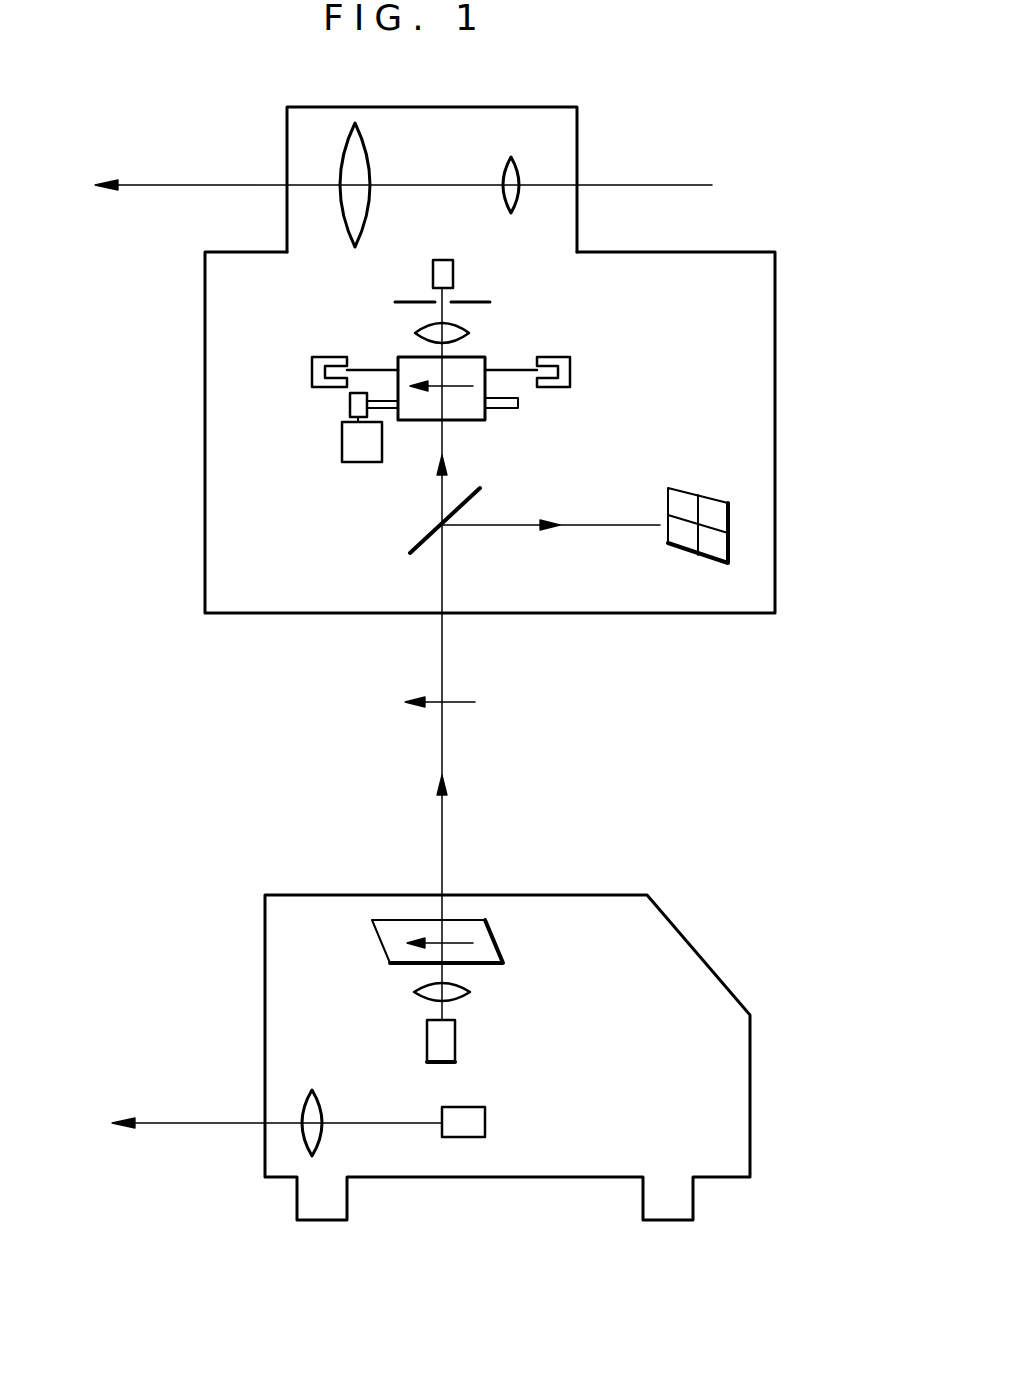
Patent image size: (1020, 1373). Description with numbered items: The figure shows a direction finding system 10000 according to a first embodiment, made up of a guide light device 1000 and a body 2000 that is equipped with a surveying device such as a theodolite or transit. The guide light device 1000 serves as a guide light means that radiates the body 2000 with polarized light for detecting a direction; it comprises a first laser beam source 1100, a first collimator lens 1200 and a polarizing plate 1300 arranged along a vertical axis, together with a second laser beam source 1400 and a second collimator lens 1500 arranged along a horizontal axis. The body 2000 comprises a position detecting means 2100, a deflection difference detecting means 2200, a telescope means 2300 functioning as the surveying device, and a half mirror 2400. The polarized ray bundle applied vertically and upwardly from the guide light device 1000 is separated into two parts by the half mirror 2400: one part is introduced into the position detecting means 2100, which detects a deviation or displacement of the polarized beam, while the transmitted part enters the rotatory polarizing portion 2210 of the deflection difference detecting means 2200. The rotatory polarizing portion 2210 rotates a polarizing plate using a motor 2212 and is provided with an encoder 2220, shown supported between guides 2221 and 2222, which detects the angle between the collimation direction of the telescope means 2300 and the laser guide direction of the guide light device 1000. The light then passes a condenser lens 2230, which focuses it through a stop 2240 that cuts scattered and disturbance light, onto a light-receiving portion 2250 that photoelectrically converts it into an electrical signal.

The direction finding system 10000 is at (238, 1214).
The body 2000 is at (720, 695).
The telescope means 2300 is at (429, 140).
The deflection difference detecting means 2200 is at (548, 258).
The light-receiving portion 2250 is at (493, 250).
The stop 2240 is at (490, 302).
The condenser lens 2230 is at (470, 333).
The encoder 2220 is at (395, 350).
The left guide 2221 is at (312, 370).
The right guide 2222 is at (570, 372).
The rotatory polarizing portion 2210 is at (482, 424).
The motor 2212 is at (342, 440).
The half mirror 2400 is at (430, 535).
The position detecting means 2100 is at (708, 492).
The guide light device 1000 is at (762, 914).
The polarizing plate 1300 is at (490, 950).
The first collimator lens 1200 is at (470, 992).
The first laser beam source 1100 is at (457, 1055).
The second collimator lens 1500 is at (322, 1110).
The second laser beam source 1400 is at (478, 1125).